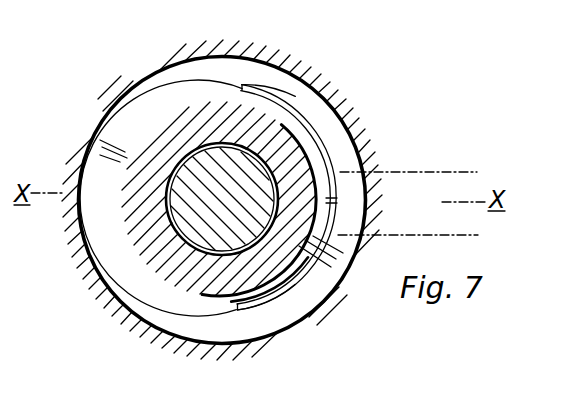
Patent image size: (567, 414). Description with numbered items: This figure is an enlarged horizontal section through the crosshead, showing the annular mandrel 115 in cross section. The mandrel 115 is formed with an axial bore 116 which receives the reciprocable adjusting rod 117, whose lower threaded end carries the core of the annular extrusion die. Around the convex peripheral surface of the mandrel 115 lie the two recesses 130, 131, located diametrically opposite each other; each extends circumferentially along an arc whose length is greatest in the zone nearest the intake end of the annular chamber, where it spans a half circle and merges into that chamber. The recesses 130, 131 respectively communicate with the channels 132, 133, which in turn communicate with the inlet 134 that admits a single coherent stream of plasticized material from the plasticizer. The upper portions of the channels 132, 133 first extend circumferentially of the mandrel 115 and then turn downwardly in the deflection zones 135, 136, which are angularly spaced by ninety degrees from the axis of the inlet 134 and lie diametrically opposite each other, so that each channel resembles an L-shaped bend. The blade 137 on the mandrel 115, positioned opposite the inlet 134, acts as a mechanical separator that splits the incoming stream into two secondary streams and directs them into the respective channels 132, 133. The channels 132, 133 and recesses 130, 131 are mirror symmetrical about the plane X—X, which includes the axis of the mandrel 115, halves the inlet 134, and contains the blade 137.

The mandrel 115 is at (113, 315).
The axial bore 116 is at (175, 198).
The adjusting rod 117 is at (172, 210).
The recess 130 is at (240, 325).
The recess 131 is at (250, 73).
The channel 132 is at (290, 290).
The channel 133 is at (312, 135).
The inlet 134 is at (430, 178).
The zone of deflection 135 is at (208, 317).
The zone of deflection 136 is at (224, 80).
The blade 137 is at (330, 200).